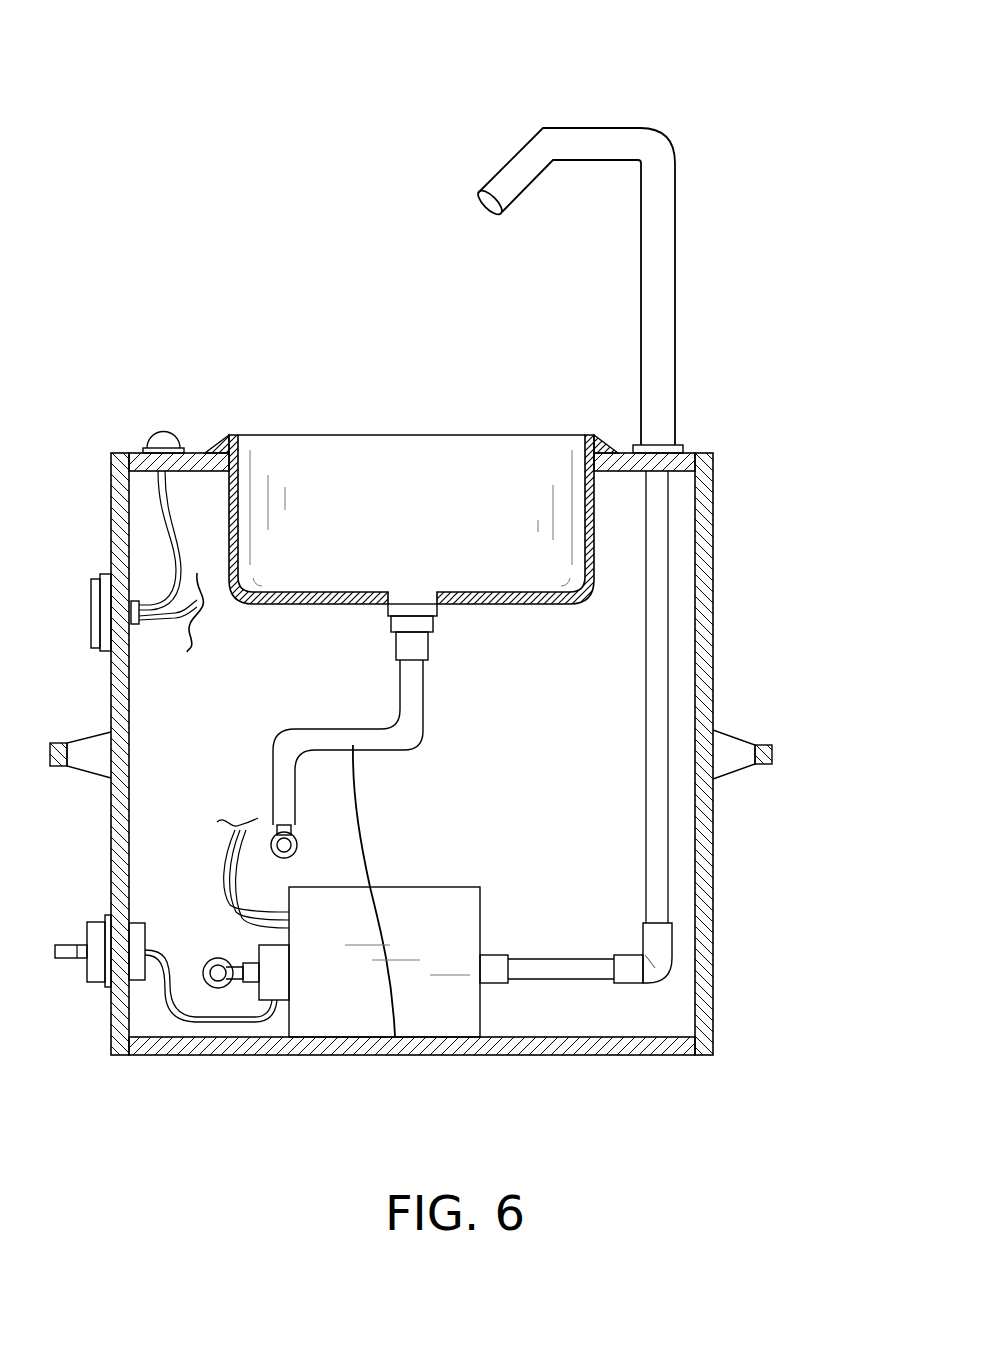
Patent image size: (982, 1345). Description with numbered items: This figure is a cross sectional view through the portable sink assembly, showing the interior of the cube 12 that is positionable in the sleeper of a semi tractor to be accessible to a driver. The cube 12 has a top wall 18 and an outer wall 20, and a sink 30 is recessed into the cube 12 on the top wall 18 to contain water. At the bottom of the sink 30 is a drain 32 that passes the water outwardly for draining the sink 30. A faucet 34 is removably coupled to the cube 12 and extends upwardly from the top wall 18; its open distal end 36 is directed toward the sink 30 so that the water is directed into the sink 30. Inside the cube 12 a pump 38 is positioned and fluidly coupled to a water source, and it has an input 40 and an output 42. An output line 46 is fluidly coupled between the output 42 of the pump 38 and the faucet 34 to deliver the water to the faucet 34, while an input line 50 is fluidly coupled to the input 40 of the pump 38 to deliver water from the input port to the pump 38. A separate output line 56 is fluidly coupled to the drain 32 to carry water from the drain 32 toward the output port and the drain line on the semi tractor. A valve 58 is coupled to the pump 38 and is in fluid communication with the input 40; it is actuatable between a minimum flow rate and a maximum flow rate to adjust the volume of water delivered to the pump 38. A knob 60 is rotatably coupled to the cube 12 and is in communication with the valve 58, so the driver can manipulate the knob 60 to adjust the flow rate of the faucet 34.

The cube 12 is at (713, 465).
The top wall 18 is at (200, 452).
The outer wall 20 is at (714, 607).
The sink 30 is at (591, 433).
The drain 32 is at (435, 608).
The faucet 34 is at (524, 253).
The distal end 36 is at (484, 210).
The pump 38 is at (480, 1008).
The input 40 is at (250, 982).
The output 42 is at (502, 968).
The output line 46 is at (668, 845).
The input line 50 is at (222, 975).
The output line 56 is at (395, 1037).
The valve 58 is at (270, 993).
The knob 60 is at (95, 990).